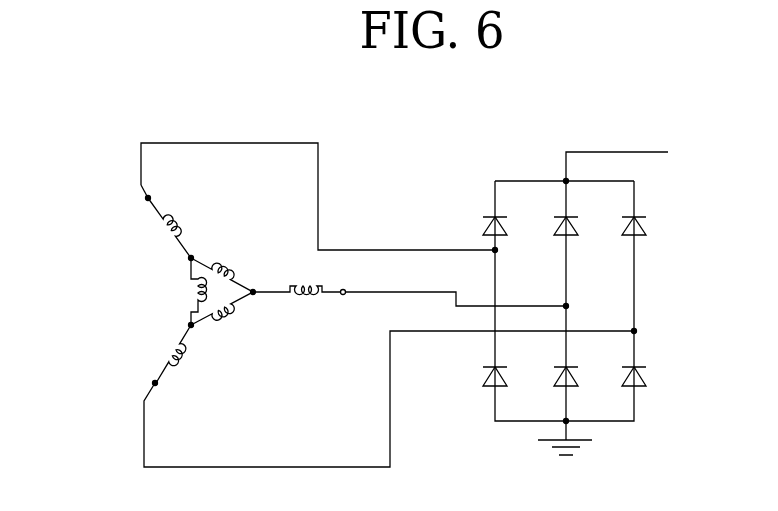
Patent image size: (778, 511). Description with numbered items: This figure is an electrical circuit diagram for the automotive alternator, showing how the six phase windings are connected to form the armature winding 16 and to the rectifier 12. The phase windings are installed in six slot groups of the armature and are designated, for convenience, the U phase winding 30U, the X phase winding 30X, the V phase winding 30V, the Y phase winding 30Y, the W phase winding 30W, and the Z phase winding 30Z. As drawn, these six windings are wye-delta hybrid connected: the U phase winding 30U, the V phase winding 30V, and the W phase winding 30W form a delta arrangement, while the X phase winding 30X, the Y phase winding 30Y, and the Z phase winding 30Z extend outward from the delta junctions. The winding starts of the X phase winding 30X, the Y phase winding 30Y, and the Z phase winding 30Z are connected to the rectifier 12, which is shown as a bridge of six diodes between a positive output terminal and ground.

The rectifier 12 is at (510, 168).
The armature winding 16 is at (118, 252).
The X phase winding 30X is at (184, 225).
The V phase winding 30V is at (231, 269).
The U phase winding 30U is at (169, 291).
The W phase winding 30W is at (226, 316).
The Y phase winding 30Y is at (296, 308).
The Z phase winding 30Z is at (188, 357).